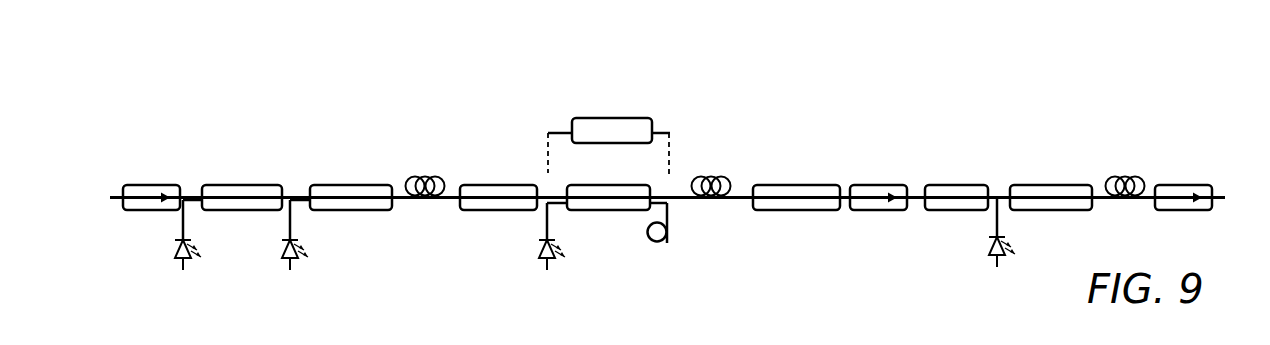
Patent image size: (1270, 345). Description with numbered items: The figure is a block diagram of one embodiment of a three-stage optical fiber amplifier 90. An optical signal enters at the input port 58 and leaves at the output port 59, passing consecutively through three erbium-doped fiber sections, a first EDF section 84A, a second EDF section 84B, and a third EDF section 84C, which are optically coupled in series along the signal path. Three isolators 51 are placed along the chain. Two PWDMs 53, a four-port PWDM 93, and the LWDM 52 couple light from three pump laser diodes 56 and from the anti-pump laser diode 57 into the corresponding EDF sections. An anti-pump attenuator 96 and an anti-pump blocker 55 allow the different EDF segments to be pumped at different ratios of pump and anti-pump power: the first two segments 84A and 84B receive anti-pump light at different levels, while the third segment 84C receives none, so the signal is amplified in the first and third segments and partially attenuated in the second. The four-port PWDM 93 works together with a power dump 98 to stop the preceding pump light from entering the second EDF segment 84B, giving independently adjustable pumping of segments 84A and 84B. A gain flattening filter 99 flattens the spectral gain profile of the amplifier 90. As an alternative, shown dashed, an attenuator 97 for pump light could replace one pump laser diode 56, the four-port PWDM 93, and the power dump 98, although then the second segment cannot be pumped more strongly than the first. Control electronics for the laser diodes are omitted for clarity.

The three-stage optical fiber amplifier 90 is at (303, 55).
The input port 58 is at (110, 197).
The isolator 51 is at (152, 184).
The LWDM 52 is at (235, 184).
The PWDM 53 is at (349, 184).
The anti-pump laser diode 57 is at (208, 254).
The pump laser diode 56 is at (312, 258).
The first EDF section 84A is at (449, 176).
The attenuator 96 is at (507, 184).
The attenuator for pump light 97 is at (601, 118).
The four-port PWDM 93 is at (607, 211).
The power dump 98 is at (658, 243).
The second EDF section 84B is at (737, 176).
The blocker 55 is at (793, 184).
The gain flattening filter 99 is at (967, 184).
The third EDF section 84C is at (1147, 177).
The output port 59 is at (1224, 192).